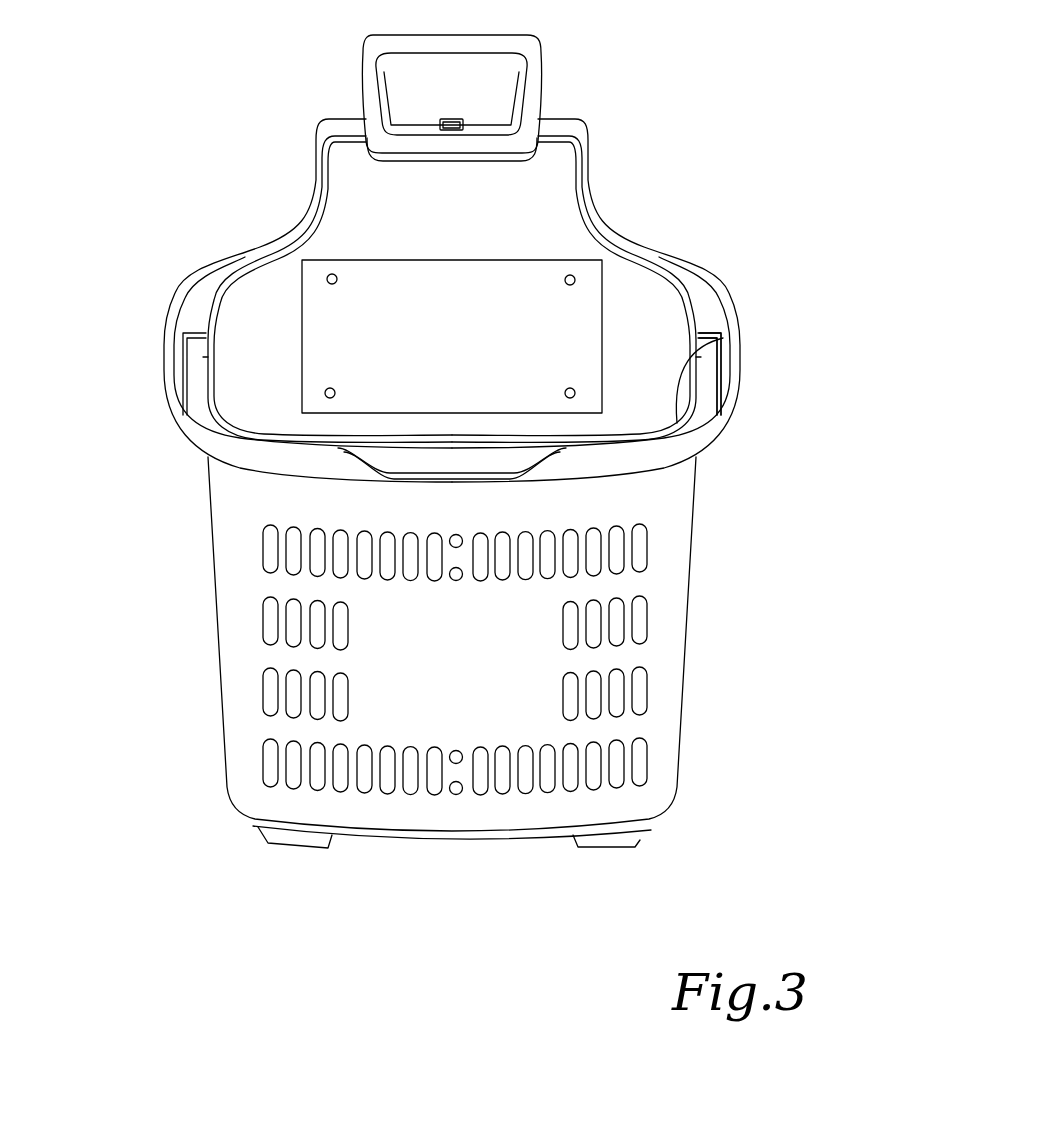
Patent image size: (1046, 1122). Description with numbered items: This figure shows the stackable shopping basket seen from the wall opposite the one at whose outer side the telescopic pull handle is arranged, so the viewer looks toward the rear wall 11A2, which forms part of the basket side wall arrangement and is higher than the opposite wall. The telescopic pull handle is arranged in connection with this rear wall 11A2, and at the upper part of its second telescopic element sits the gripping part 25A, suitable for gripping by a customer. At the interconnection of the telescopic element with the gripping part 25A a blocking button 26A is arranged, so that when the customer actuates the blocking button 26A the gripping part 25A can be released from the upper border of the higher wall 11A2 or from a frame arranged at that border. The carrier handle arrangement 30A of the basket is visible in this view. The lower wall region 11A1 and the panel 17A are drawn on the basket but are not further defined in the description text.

The front wall of basket body 11A1 is at (253, 755).
The rear wall 11A2 is at (580, 143).
The mounting panel 17A is at (342, 258).
The gripping part 25A is at (522, 52).
The blocking button 26A is at (449, 120).
The carrier handle arrangement 30A is at (723, 337).